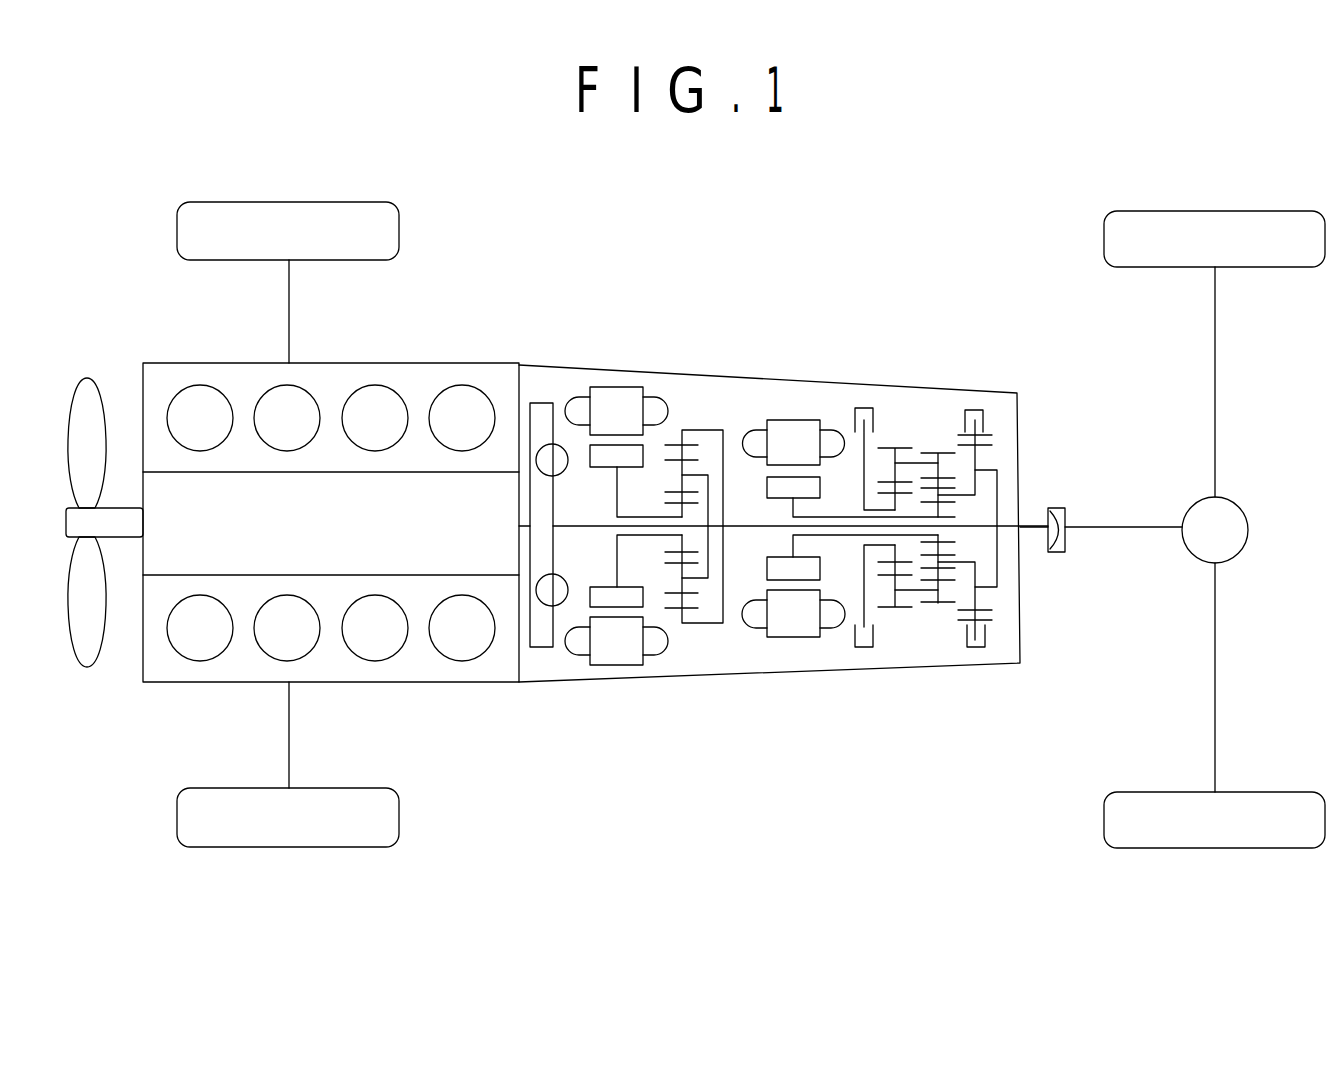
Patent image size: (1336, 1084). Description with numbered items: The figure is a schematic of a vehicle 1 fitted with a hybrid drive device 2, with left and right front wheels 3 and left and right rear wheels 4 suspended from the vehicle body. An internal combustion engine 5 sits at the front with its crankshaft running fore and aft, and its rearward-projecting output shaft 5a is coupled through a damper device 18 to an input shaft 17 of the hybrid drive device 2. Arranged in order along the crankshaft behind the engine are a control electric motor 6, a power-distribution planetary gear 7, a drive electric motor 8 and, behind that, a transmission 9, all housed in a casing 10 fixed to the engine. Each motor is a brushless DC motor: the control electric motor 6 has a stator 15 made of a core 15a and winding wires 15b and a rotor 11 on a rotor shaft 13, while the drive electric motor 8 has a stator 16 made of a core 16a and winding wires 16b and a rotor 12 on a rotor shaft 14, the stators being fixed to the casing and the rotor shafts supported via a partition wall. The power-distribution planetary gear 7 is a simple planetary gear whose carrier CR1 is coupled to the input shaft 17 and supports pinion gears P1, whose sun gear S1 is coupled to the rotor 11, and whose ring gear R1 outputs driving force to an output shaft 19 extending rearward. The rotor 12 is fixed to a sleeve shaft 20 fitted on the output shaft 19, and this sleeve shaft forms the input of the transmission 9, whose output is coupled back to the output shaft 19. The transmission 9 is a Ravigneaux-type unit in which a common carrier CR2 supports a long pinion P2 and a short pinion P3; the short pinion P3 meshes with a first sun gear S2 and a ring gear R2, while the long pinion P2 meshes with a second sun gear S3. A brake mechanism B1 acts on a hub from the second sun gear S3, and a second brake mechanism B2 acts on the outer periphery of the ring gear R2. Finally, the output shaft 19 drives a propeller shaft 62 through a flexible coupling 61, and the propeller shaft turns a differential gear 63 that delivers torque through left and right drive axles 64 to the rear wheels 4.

The vehicle 1 is at (861, 243).
The hybrid drive device 2 is at (912, 381).
The front wheels 3 is at (345, 217).
The rear wheels 4 is at (1270, 230).
The internal combustion engine 5 is at (423, 354).
The output shaft 5a is at (522, 523).
The control electric motor 6 is at (598, 366).
The power-distribution planetary gear 7 is at (713, 416).
The drive electric motor 8 is at (824, 391).
The transmission 9 is at (950, 403).
The casing 10 is at (570, 685).
The rotor 11 is at (602, 462).
The rotor 12 is at (855, 612).
The rotor shaft 13 is at (643, 502).
The rotor shaft 14 is at (790, 538).
The stator 15 is at (618, 388).
The core 15a is at (642, 396).
The winding wires 15b is at (577, 397).
The stator 16 is at (799, 409).
The core 16a is at (776, 418).
The winding wires 16b is at (745, 428).
The input shaft 17 is at (590, 527).
The damper device 18 is at (537, 402).
The output shaft 19 is at (752, 525).
The sleeve shaft 20 is at (828, 517).
The flexible coupling 61 is at (1068, 513).
The propeller shaft 62 is at (1122, 523).
The differential gear 63 is at (1238, 503).
The drive axles 64 is at (1218, 387).
The brake mechanism B1 is at (865, 408).
The second brake mechanism B2 is at (975, 410).
The carrier CR1 is at (726, 610).
The common carrier CR2 is at (1002, 482).
The pinion gears P1 is at (712, 610).
The long pinion P2 is at (915, 603).
The short pinion P3 is at (985, 600).
The ring gear R1 is at (678, 622).
The ring gear R2 is at (990, 628).
The sun gear S1 is at (677, 553).
The first sun gear S2 is at (950, 546).
The second sun gear S3 is at (880, 625).